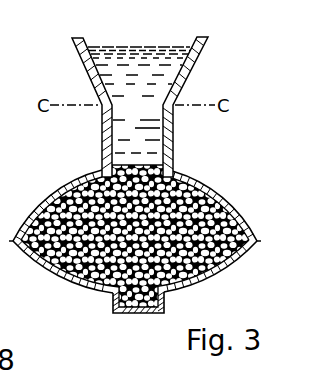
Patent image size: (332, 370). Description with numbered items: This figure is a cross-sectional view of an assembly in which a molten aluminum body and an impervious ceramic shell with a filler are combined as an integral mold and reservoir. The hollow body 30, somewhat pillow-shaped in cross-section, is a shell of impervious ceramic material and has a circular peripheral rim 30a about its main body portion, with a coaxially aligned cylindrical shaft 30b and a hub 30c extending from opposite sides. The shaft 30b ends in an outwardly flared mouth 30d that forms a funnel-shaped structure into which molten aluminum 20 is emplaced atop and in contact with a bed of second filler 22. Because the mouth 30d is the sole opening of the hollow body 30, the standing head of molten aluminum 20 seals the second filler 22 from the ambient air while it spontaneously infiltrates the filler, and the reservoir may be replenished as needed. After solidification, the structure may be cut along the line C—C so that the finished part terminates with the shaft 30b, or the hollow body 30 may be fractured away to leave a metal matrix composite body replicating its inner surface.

The molten aluminum 20 is at (110, 120).
The bed of second filler 22 is at (200, 182).
The hollow body 30 is at (50, 204).
The circular peripheral rim 30a is at (15, 241).
The cylindrical shaft 30b is at (173, 138).
The hub 30c is at (138, 313).
The outwardly flared mouth 30d is at (77, 50).